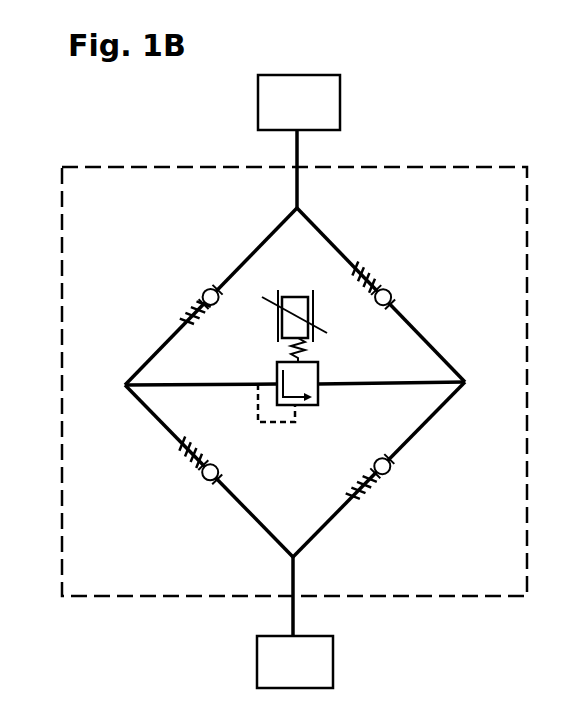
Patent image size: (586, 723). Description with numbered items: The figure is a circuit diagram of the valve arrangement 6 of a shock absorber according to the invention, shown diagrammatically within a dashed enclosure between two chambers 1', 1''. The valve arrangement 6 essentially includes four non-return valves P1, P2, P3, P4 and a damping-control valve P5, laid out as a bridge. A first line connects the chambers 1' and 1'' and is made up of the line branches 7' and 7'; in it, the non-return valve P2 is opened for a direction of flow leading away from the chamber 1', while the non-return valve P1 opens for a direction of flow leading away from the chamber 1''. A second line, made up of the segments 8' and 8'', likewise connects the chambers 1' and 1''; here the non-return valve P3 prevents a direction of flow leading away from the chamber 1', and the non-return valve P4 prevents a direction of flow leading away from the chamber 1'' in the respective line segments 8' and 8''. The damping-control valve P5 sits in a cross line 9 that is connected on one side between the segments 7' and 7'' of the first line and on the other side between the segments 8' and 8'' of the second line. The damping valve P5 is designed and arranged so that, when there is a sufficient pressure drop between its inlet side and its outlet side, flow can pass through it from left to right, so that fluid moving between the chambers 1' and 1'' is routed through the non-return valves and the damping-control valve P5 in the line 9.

The chamber 1' is at (299, 141).
The chamber 1'' is at (295, 622).
The valve arrangement 6 is at (58, 366).
The line branch 7' is at (211, 296).
The line branch 7'' is at (209, 471).
The line segment 8' is at (381, 295).
The line segment 8'' is at (379, 469).
The line 9 is at (207, 383).
The non-return valve P1 is at (200, 476).
The non-return valve P2 is at (200, 289).
The non-return valve P3 is at (394, 287).
The non-return valve P4 is at (389, 478).
The damping-control valve P5 is at (311, 388).